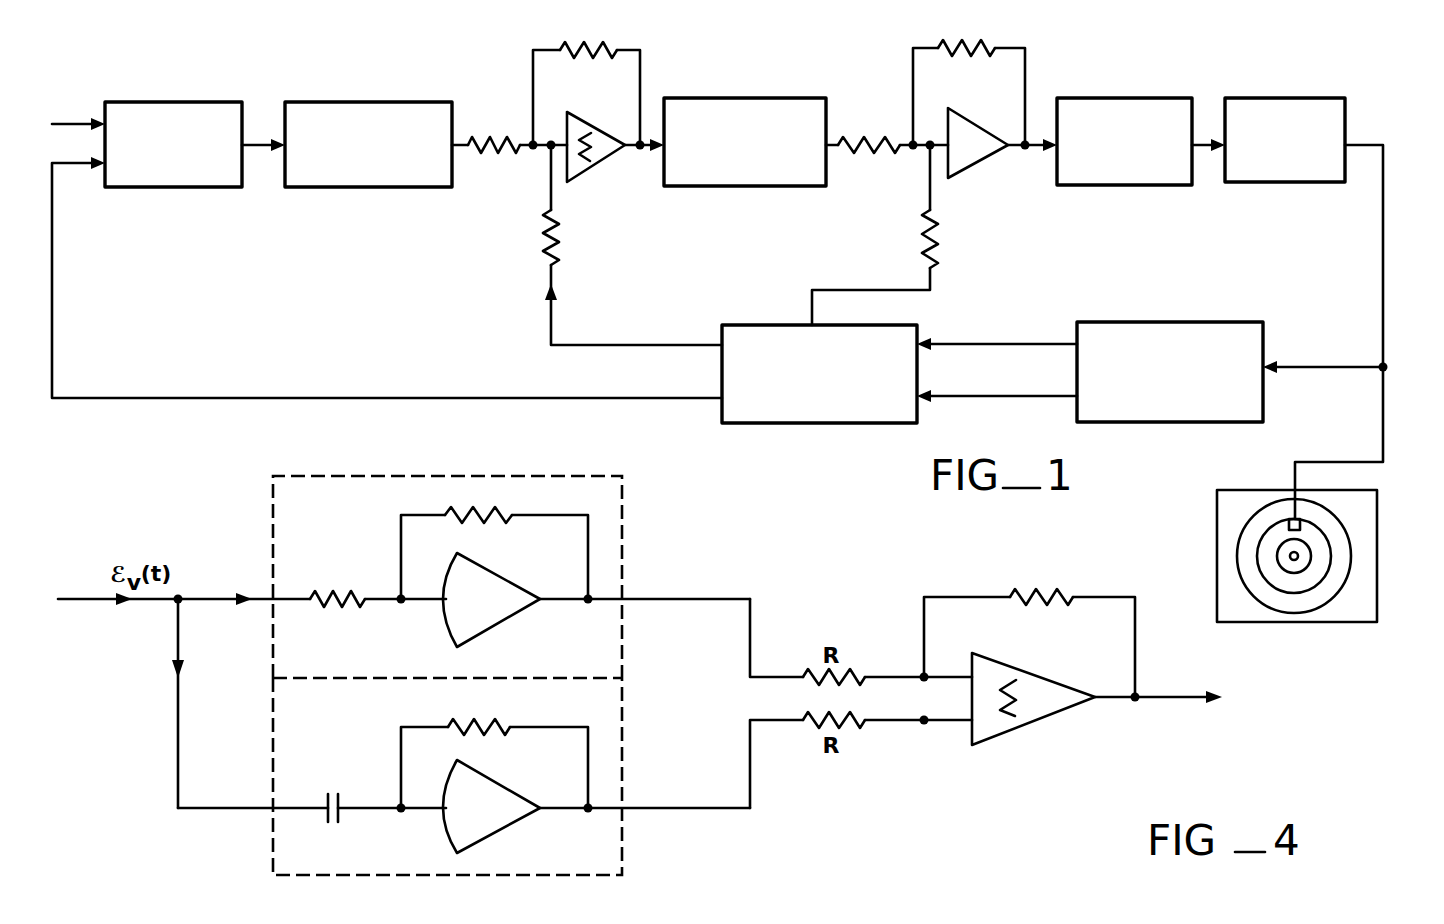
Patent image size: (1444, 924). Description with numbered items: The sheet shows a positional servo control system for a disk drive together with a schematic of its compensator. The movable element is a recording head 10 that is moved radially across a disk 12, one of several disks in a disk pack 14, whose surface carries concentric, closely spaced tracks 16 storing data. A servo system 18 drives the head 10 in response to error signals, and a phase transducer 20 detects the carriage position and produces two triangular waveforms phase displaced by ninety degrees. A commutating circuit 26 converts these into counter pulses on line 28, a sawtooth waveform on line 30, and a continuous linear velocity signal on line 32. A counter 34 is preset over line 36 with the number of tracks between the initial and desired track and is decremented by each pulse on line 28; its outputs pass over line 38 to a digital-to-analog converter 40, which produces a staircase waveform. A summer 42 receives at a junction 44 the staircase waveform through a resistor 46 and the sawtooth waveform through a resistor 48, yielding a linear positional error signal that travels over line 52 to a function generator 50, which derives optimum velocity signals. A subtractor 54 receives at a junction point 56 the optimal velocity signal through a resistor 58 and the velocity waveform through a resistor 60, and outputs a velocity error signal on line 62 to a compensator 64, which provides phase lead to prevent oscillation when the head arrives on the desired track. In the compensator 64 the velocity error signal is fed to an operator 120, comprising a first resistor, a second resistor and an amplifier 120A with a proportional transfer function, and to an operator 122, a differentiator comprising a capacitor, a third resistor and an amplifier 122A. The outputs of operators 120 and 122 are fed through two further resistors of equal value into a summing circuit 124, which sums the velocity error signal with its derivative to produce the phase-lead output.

In FIG. 1, the recording head 10 is at (1289, 520).
In FIG. 1, the disk 12 is at (1340, 590).
In FIG. 1, the disk pack 14 is at (1340, 623).
In FIG. 1, the tracks 16 is at (1331, 554).
In FIG. 1, the servo system 18 is at (1292, 97).
In FIG. 1, the phase transducer 20 is at (1190, 322).
In FIG. 1, the commutating circuit 26 is at (852, 424).
In FIG. 1, the line 28 is at (392, 398).
In FIG. 1, the line 30 is at (627, 345).
In FIG. 1, the line 32 is at (853, 290).
In FIG. 1, the counter 34 is at (181, 100).
In FIG. 1, the line 36 is at (64, 122).
In FIG. 1, the line 38 is at (252, 142).
In FIG. 1, the digital-to-analog converter 40 is at (380, 100).
In FIG. 1, the summer 42 is at (660, 48).
In FIG. 1, the junction 44 is at (548, 150).
In FIG. 1, the resistor 46 is at (488, 132).
In FIG. 1, the resistor 48 is at (540, 236).
In FIG. 1, the function generator 50 is at (745, 97).
In FIG. 1, the line 52 is at (647, 158).
In FIG. 1, the subtractor 54 is at (1050, 64).
In FIG. 1, the junction point 56 is at (934, 150).
In FIG. 1, the resistor 58 is at (860, 136).
In FIG. 1, the resistor 60 is at (940, 246).
In FIG. 1, the line 62 is at (1036, 149).
In FIG. 1, the compensator 64 is at (1128, 97).
In FIG. 4, the operator 120 is at (622, 528).
In FIG. 4, the amplifier 120A is at (500, 623).
In FIG. 4, the operator 122 is at (622, 835).
In FIG. 4, the amplifier 122A is at (500, 830).
In FIG. 4, the summing circuit 124 is at (1132, 568).